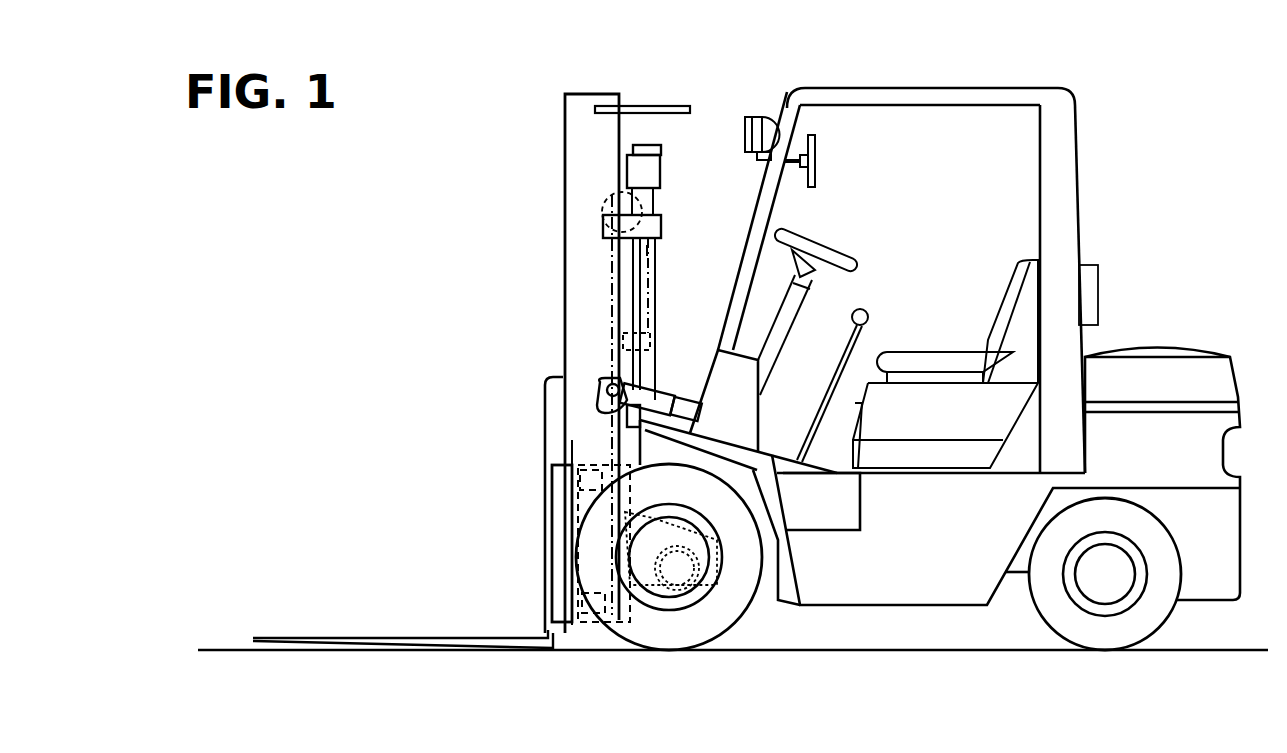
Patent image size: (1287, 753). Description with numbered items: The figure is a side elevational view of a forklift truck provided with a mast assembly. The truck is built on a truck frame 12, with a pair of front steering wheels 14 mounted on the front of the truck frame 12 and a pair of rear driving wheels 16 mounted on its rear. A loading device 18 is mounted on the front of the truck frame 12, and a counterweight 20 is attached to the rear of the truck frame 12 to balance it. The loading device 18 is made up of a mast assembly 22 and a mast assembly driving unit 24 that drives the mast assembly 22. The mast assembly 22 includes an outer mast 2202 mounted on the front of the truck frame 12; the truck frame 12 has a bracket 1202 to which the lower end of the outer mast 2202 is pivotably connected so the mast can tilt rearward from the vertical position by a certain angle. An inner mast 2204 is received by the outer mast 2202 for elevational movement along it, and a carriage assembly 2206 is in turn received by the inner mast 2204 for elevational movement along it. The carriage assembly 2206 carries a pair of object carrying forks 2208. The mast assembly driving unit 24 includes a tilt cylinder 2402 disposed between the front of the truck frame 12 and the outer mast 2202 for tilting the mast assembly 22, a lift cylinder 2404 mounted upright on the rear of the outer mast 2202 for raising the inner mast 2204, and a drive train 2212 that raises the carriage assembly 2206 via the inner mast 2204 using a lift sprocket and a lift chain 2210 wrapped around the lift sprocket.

The truck frame 12 is at (872, 612).
The front steering wheels 14 is at (717, 610).
The rear driving wheels 16 is at (1105, 630).
The loading device 18 is at (560, 117).
The counterweight 20 is at (1145, 372).
The mast assembly 22 is at (560, 358).
The mast assembly driving unit 24 is at (672, 163).
The bracket 1202 is at (678, 567).
The outer mast 2202 is at (590, 301).
The inner mast 2204 is at (572, 228).
The carriage assembly 2206 is at (560, 483).
The object carrying forks 2208 is at (428, 636).
The lift chain 2210 is at (605, 275).
The drive train 2212 is at (603, 208).
The tilt cylinder 2402 is at (689, 402).
The lift cylinder 2404 is at (652, 252).